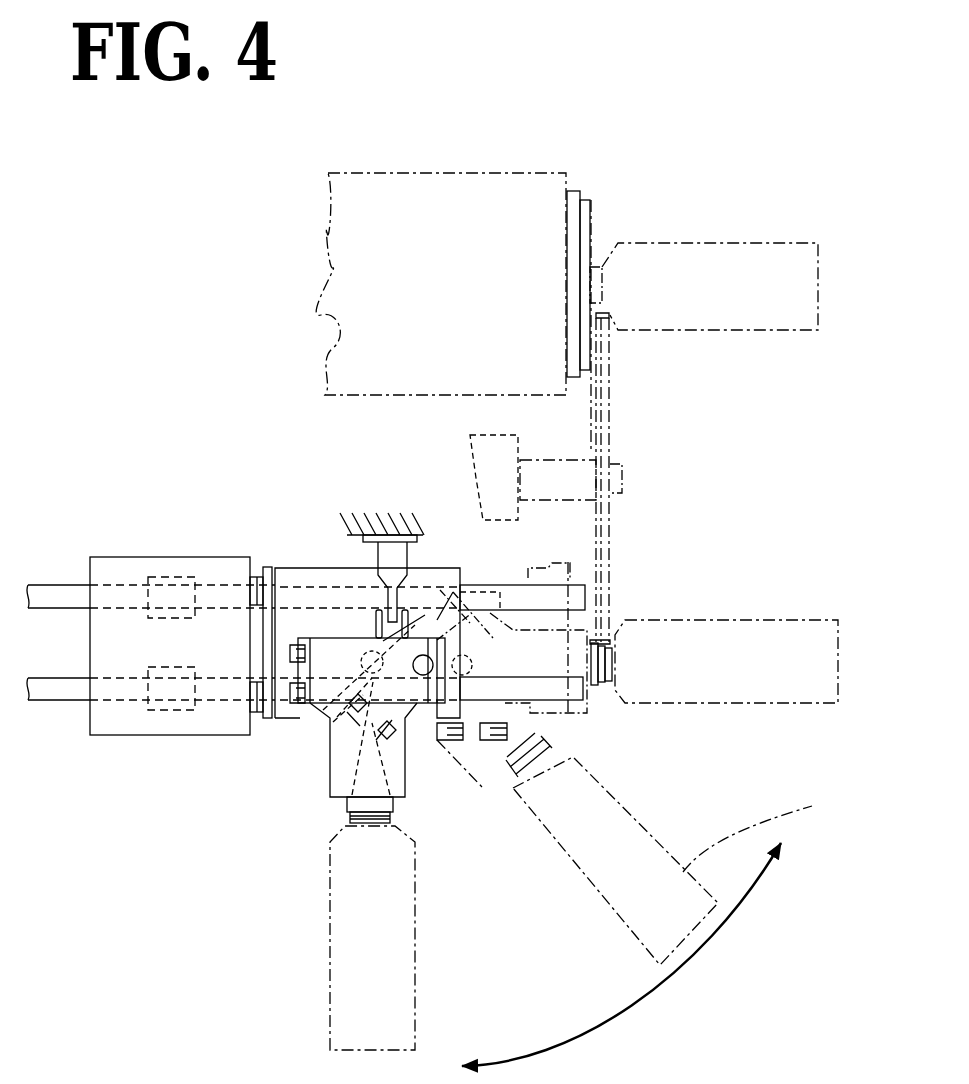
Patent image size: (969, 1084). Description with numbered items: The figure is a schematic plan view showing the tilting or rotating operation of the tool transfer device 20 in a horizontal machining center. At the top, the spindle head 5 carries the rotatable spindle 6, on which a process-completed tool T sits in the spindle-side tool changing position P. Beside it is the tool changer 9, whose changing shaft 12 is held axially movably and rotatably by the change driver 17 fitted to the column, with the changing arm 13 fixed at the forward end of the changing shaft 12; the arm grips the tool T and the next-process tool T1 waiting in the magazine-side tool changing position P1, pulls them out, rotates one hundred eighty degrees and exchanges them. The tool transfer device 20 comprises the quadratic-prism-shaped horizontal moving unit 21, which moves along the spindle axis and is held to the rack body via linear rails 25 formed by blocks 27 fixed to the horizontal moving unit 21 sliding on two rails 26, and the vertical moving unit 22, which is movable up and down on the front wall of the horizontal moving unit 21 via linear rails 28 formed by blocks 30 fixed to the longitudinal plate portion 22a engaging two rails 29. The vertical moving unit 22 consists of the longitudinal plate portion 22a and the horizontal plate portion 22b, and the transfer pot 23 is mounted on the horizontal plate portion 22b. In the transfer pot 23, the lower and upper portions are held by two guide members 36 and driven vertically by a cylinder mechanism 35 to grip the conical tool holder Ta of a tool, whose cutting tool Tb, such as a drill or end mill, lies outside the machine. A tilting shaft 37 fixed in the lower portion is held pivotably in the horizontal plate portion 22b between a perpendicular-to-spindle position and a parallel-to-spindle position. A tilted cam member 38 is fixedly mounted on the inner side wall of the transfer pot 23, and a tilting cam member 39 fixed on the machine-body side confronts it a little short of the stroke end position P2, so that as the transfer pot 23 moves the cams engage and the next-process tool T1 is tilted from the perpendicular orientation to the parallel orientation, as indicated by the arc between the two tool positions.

The spindle head 5 is at (414, 173).
The spindle 6 is at (592, 210).
The spindle-side tool changing position P is at (606, 285).
The tool T is at (722, 244).
The tool changer 9 is at (558, 340).
The change driver 17 is at (482, 430).
The changing shaft 12 is at (523, 462).
The changing arm 13 is at (596, 433).
The tilting cam member 39 is at (412, 556).
The tilted cam member 38 is at (372, 622).
The tool transfer device 20 is at (337, 465).
The horizontal moving unit 21 is at (211, 556).
The vertical moving unit 22 is at (284, 566).
The longitudinal plate portion 22a is at (320, 732).
The horizontal plate portion 22b is at (332, 772).
The transfer pot 23 is at (338, 635).
The linear rails 25 is at (127, 475).
The rails 26 is at (53, 583).
The blocks 27 is at (148, 577).
The linear rails 28 is at (264, 566).
The rails 29 is at (250, 720).
The blocks 30 is at (262, 720).
The cylinder mechanism 35 is at (395, 800).
The guide members 36 is at (286, 692).
The tilting shaft 37 is at (308, 707).
The next-process tool T1 is at (770, 705).
The tool holder Ta is at (427, 740).
The cutting tool Tb is at (418, 957).
The magazine-side tool changing position P1 is at (614, 666).
The stroke end position P2 is at (568, 562).